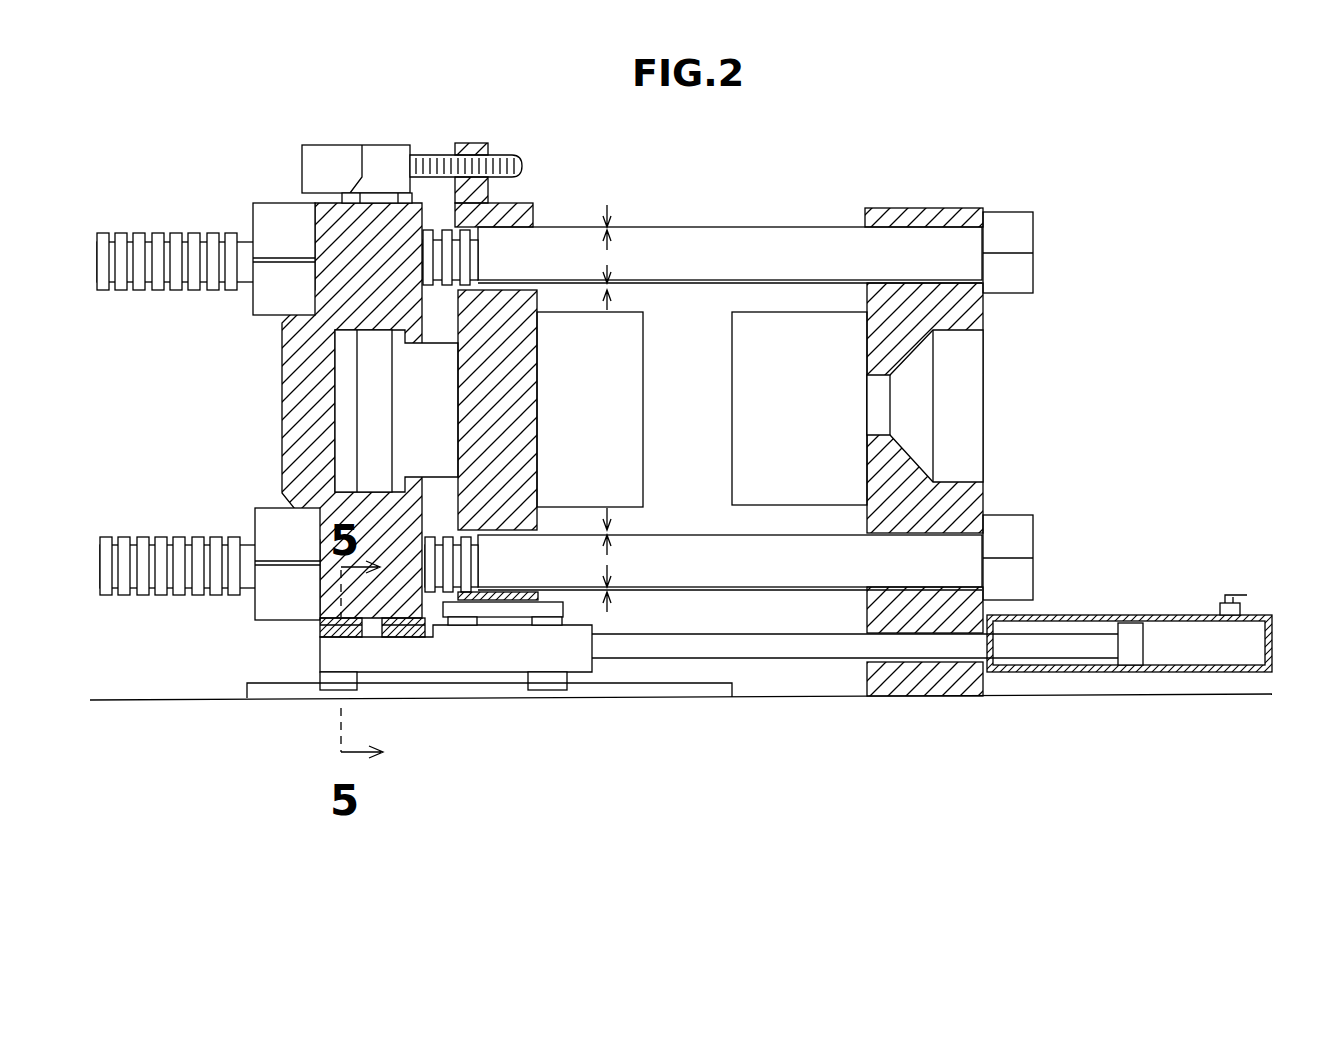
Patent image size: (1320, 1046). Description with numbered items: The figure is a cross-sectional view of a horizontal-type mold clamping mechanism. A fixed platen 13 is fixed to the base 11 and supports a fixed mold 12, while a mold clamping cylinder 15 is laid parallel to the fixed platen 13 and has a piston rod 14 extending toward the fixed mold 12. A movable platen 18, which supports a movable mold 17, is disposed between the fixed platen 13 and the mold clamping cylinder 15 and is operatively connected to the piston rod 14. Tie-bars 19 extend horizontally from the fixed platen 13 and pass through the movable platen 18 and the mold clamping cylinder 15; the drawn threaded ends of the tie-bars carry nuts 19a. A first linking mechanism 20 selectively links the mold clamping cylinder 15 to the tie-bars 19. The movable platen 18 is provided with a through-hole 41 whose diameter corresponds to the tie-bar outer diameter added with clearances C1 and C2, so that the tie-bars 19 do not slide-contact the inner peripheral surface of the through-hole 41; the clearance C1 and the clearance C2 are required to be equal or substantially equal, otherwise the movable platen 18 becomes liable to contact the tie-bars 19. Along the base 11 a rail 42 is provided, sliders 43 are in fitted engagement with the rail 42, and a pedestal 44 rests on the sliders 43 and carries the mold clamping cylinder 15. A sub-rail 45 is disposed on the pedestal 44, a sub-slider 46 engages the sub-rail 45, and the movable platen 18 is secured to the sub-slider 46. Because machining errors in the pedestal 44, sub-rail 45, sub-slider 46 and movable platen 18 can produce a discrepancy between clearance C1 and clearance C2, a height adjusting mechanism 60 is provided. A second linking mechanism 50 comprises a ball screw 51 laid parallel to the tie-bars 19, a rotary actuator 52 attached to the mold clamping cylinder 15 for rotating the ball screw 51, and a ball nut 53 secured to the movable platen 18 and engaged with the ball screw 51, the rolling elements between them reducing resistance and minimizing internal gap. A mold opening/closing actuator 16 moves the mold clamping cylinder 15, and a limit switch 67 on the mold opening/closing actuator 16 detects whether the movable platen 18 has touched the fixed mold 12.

The base 11 is at (790, 702).
The fixed mold 12 is at (760, 432).
The fixed platen 13 is at (918, 210).
The piston rod 14 is at (415, 380).
The mold clamping cylinder 15 is at (303, 413).
The mold opening/closing actuator 16 is at (1160, 673).
The movable mold 17 is at (612, 368).
The movable platen 18 is at (518, 204).
The tie-bars 19 is at (565, 447).
The tie bar nuts 19a is at (180, 232).
The first linking mechanism 20 is at (314, 349).
The through-hole 41 is at (523, 243).
The rail 42 is at (489, 689).
The sliders 43 is at (330, 682).
The pedestal 44 is at (394, 660).
The sub-rail 45 is at (500, 628).
The sub-slider 46 is at (517, 610).
The second linking mechanism 50 is at (412, 118).
The ball screw 51 is at (440, 155).
The rotary actuator 52 is at (337, 145).
The ball nut 53 is at (473, 143).
The height adjusting mechanism 60 is at (316, 632).
The limit switch 67 is at (1245, 612).
The clearance C1 is at (612, 366).
The clearance C2 is at (612, 452).